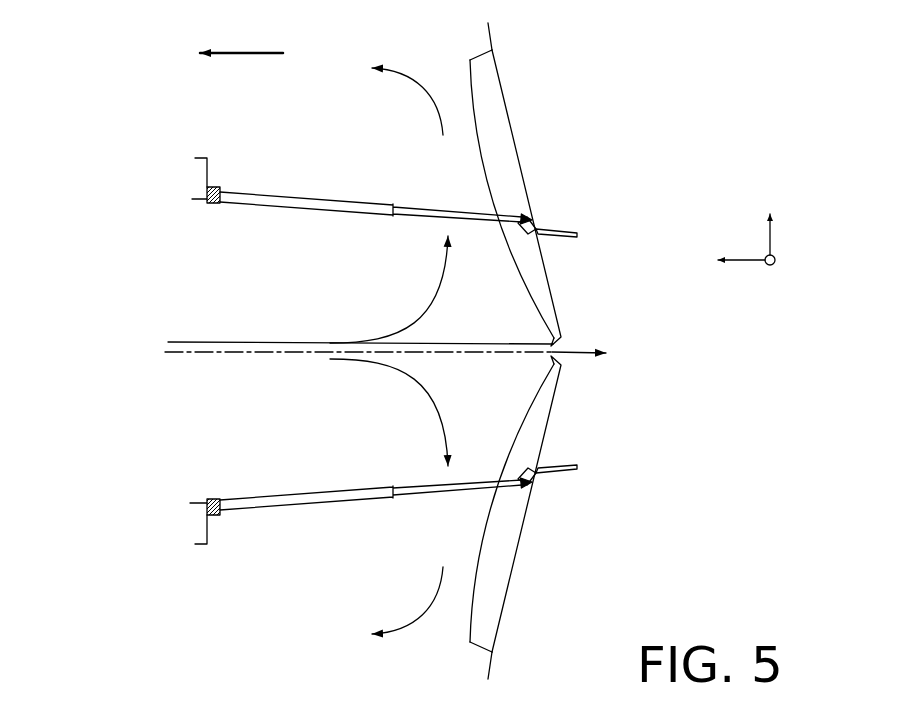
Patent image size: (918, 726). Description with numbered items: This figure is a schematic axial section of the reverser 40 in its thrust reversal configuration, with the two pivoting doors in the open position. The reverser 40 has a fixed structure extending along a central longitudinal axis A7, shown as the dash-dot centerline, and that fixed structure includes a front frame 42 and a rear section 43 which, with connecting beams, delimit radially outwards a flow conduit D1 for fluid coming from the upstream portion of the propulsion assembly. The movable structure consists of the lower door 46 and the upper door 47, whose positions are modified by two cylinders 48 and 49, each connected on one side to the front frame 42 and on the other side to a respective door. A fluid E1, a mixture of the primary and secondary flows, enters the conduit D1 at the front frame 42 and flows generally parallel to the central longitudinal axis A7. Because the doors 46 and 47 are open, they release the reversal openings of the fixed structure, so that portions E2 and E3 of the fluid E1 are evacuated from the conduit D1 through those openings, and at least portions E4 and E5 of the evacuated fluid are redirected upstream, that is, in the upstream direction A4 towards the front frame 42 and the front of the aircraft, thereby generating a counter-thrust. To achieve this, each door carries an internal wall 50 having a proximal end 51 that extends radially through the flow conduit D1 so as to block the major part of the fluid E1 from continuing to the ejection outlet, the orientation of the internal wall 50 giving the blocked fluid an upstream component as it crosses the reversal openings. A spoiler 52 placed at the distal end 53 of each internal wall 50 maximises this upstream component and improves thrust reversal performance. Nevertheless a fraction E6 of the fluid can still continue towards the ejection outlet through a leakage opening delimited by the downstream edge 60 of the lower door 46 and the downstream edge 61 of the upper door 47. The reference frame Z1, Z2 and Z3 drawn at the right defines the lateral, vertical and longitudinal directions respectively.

The reverser 40 is at (134, 171).
The front frame 42 is at (197, 158).
The rear section 43 is at (553, 230).
The lower door 46 is at (520, 537).
The upper door 47 is at (517, 152).
The cylinder 48 is at (288, 196).
The cylinder 49 is at (280, 505).
The internal wall 50 is at (480, 170).
The proximal end 51 is at (529, 303).
The spoiler 52 is at (470, 60).
The distal end 53 is at (483, 65).
The downstream edge 60 is at (564, 358).
The downstream edge 61 is at (556, 342).
The upstream direction A4 is at (237, 52).
The central longitudinal axis A7 is at (210, 353).
The flow conduit D1 is at (237, 409).
The fluid E1 is at (242, 338).
The portion of the fluid E2 is at (438, 277).
The portion of the fluid E3 is at (437, 400).
The redirected fluid portion E4 is at (413, 80).
The redirected fluid portion E5 is at (405, 627).
The fraction of the fluid E6 is at (563, 345).
The lateral direction Z1 is at (791, 270).
The vertical direction Z2 is at (793, 220).
The longitudinal direction Z3 is at (735, 279).